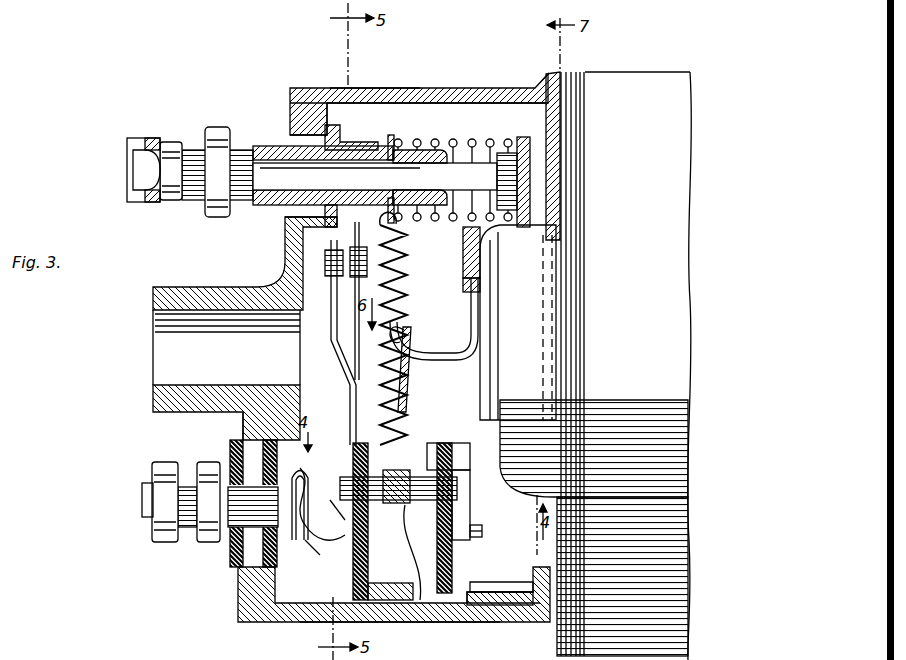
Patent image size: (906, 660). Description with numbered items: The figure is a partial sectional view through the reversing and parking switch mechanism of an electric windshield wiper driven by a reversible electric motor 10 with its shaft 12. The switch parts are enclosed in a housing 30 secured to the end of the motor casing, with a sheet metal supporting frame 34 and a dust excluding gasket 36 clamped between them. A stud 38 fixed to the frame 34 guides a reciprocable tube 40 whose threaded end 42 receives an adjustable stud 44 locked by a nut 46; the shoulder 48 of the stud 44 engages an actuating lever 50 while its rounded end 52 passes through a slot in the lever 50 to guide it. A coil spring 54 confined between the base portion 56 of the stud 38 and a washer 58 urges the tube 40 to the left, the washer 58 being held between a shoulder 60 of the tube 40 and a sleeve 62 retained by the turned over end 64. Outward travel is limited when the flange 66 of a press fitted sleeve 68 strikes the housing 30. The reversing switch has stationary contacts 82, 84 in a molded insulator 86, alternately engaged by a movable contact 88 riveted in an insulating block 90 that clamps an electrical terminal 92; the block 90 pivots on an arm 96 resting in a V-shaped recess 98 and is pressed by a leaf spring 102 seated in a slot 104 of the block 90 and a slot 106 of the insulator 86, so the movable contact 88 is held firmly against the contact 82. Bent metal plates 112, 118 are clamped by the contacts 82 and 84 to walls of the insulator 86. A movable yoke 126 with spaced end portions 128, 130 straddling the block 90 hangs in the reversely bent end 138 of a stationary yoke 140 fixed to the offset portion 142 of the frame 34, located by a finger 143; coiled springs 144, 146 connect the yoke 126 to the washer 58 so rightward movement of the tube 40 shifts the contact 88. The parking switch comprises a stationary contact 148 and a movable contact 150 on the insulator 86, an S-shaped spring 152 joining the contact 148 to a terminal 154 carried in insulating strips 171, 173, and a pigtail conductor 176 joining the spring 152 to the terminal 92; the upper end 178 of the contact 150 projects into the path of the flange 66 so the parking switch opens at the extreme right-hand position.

The electric motor 10 is at (688, 224).
The shaft 12 is at (470, 362).
The housing 30 is at (405, 88).
The supporting frame 34 is at (546, 76).
The dust excluding gasket 36 is at (572, 72).
The stud 38 is at (460, 181).
The reciprocable tube 40 is at (372, 88).
The end of tube 42 is at (268, 146).
The stud 44 is at (192, 200).
The nut 46 is at (215, 127).
The shoulder 48 is at (172, 142).
The actuating lever 50 is at (152, 140).
The rounded end 52 is at (133, 170).
The coil spring 54 is at (455, 140).
The base portion 56 is at (520, 137).
The washer 58 is at (390, 135).
The shoulder 60 is at (380, 190).
The sleeve 62 is at (400, 148).
The turned over end 64 is at (432, 103).
The flange 66 is at (318, 102).
The sleeve 68 is at (338, 142).
The stationary contact 82 is at (352, 495).
The stationary contact 84 is at (457, 490).
The molded insulator 86 is at (352, 586).
The movable contact 88 is at (442, 443).
The insulating block 90 is at (385, 470).
The electrical terminal 92 is at (345, 540).
The arm 96 is at (478, 582).
The V-shaped recess 98 is at (476, 530).
The leaf spring 102 is at (420, 590).
The slot 104 is at (480, 595).
The slot 106 is at (430, 622).
The bent metal plate 112 is at (305, 545).
The bent metal plate 118 is at (482, 532).
The movable yoke 126 is at (405, 360).
The end portion 128 is at (410, 408).
The end portion 130 is at (345, 422).
The reversely bent end 138 is at (405, 300).
The stationary yoke 140 is at (432, 348).
The offset portion 142 is at (545, 268).
The finger 143 is at (483, 288).
The coiled spring 144 is at (238, 595).
The coiled spring 146 is at (396, 222).
The stationary contact 148 is at (300, 345).
The movable contact 150 is at (355, 290).
The S-shaped spring 152 is at (306, 464).
The terminal 154 is at (163, 462).
The insulating strip 171 is at (230, 560).
The insulating strip 173 is at (243, 437).
The conductor 176 is at (360, 622).
The upper end 178 is at (300, 232).